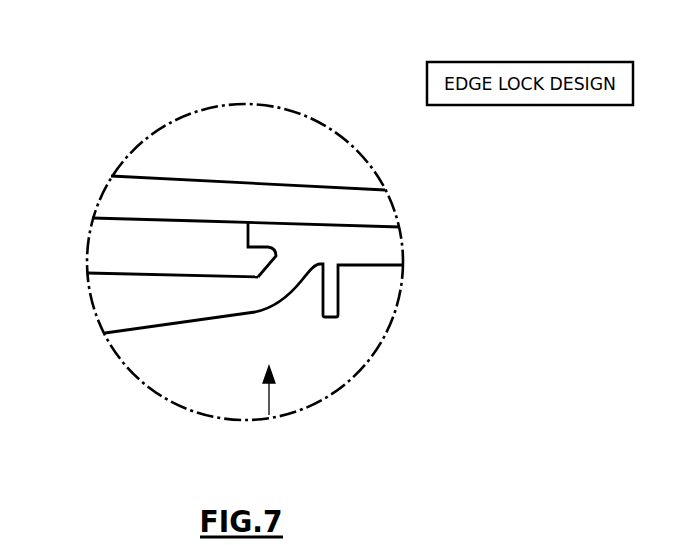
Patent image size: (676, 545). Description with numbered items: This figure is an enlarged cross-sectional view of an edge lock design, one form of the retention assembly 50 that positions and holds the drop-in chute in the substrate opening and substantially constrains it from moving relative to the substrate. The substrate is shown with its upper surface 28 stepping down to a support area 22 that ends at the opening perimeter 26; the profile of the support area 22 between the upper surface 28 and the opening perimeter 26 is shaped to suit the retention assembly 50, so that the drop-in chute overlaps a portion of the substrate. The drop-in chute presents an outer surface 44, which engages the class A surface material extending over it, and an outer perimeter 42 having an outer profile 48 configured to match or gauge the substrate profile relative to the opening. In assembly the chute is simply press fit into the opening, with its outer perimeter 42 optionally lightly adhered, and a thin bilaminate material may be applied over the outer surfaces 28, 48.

The support area 22 is at (223, 318).
The opening perimeter 26 is at (250, 222).
The upper surface 28 is at (348, 223).
The outer perimeter 42 is at (247, 245).
The outer surface 44 is at (170, 220).
The outer profile 48 is at (260, 270).
The retention assembly 50 is at (269, 415).